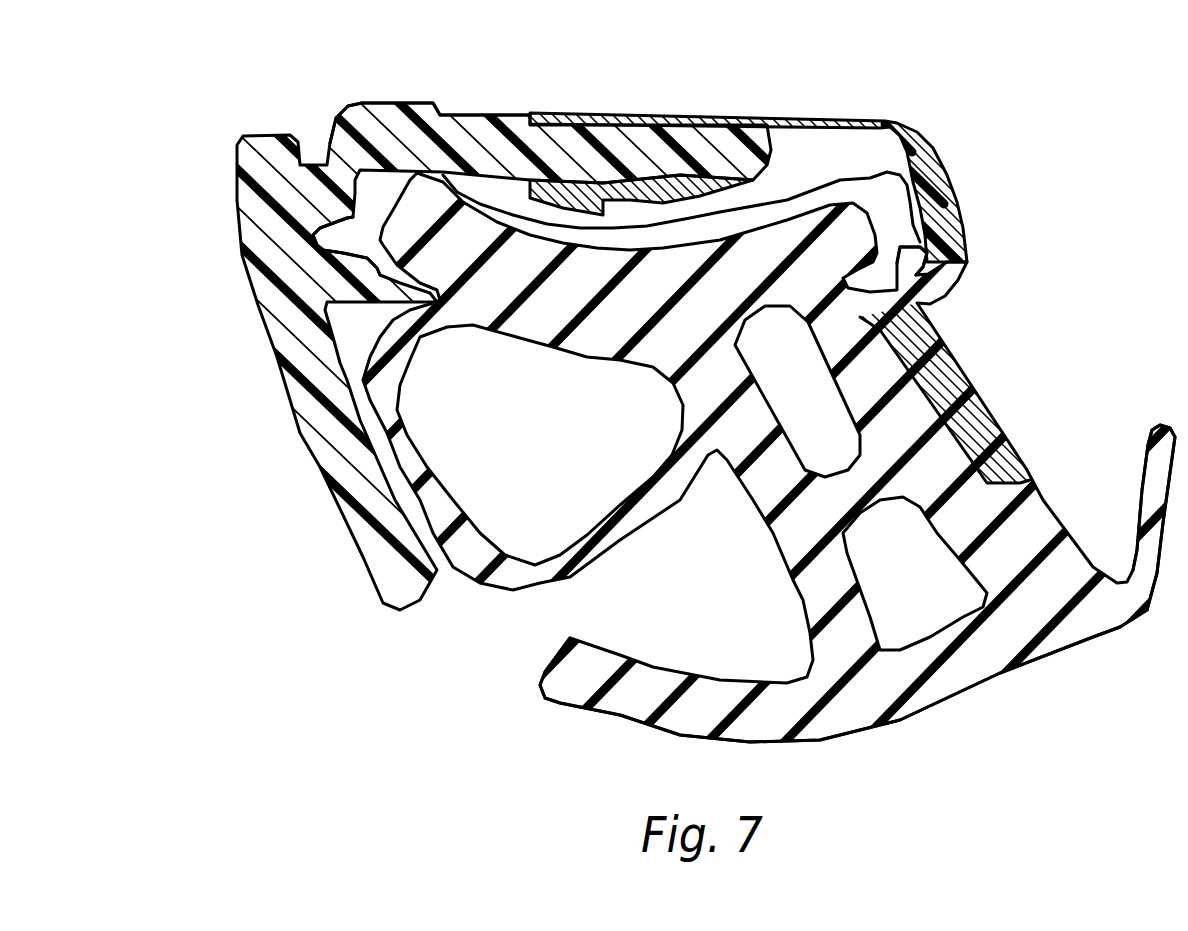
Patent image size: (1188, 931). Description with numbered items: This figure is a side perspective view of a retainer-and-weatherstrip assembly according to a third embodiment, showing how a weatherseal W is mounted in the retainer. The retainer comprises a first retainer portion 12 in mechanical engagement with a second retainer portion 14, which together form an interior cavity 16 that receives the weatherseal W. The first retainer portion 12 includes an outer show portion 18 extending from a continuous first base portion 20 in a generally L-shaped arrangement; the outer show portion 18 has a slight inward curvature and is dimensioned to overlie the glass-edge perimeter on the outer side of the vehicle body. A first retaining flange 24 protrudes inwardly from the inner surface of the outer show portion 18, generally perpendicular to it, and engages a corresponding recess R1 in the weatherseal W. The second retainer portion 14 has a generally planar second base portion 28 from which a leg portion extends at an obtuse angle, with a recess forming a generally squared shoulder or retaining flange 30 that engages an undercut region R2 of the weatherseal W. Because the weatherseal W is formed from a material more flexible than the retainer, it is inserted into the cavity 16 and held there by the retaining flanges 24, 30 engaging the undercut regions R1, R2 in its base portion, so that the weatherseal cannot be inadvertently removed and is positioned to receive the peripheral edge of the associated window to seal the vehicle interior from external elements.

The first retainer portion 12 is at (594, 338).
The second retainer portion 14 is at (970, 172).
The interior cavity 16 is at (897, 210).
The outer show portion 18 is at (262, 320).
The first base portion 20 is at (385, 103).
The first retaining flange 24 is at (313, 233).
The second base portion 28 is at (722, 112).
The retaining flange 30 is at (967, 260).
The recess R1 is at (452, 330).
The undercut region R2 is at (918, 310).
The weatherseal W is at (552, 695).